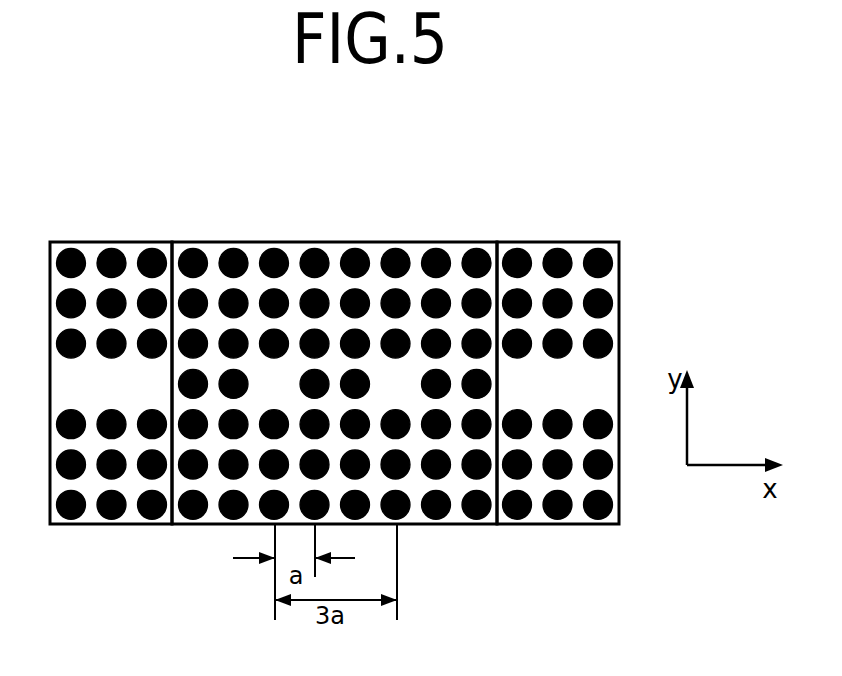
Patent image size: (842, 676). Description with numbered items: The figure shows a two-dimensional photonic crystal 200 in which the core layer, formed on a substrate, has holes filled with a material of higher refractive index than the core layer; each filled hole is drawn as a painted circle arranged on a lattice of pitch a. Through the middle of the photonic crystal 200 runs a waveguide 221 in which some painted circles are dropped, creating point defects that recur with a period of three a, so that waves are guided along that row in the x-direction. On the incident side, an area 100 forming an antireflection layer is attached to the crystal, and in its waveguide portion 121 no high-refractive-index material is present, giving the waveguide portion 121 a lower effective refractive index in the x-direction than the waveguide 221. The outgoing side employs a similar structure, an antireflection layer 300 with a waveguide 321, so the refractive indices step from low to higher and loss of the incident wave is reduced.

The antireflection layer area 100 is at (92, 242).
The photonic crystal 200 is at (317, 242).
The antireflection layer 300 is at (537, 242).
The waveguide portion 121 is at (126, 387).
The waveguide 221 is at (410, 385).
The waveguide 321 is at (573, 385).